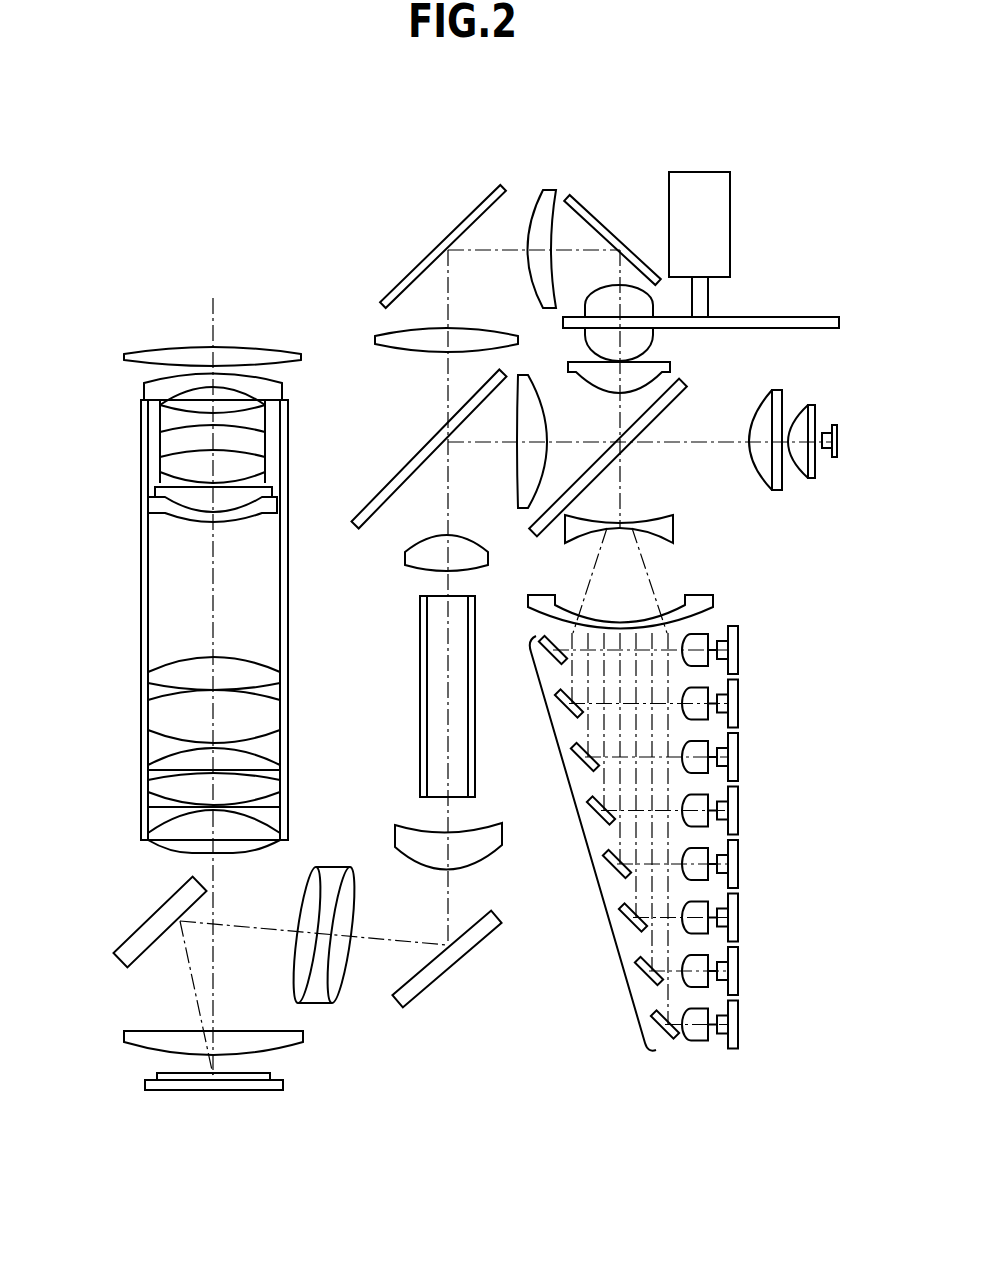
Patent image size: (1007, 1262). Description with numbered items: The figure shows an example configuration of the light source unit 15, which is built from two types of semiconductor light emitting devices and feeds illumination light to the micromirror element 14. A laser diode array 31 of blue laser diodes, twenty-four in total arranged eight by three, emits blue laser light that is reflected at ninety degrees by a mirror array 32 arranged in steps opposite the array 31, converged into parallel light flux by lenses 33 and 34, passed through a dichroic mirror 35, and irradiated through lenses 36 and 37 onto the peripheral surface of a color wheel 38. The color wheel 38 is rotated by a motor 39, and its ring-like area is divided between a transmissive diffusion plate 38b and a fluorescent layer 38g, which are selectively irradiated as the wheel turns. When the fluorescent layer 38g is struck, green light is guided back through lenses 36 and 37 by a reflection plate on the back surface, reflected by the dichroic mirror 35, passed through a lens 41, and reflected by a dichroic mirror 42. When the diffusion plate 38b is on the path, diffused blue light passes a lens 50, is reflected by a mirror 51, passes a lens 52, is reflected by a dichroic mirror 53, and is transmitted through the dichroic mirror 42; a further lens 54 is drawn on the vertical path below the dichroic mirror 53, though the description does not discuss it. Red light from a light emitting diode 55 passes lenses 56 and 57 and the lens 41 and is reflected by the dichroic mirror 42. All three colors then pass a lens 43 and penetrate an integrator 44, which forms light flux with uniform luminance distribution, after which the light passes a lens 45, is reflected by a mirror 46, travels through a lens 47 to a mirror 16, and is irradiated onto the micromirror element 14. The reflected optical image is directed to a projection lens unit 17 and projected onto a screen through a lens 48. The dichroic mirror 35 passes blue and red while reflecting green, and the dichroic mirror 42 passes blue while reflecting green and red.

The micromirror element 14 is at (283, 1086).
The light source unit 15 is at (641, 118).
The mirror 16 is at (140, 921).
The projection lens unit 17 is at (111, 348).
The laser diode array 31 is at (751, 622).
The mirror array 32 is at (589, 849).
The lens 33 is at (700, 595).
The lens 34 is at (665, 515).
The dichroic mirror 35 is at (687, 390).
The lens 36 is at (672, 366).
The lens 37 is at (652, 341).
The color wheel 38 is at (795, 317).
The transmissive diffusion plate 38b is at (730, 328).
The fluorescent layer 38g is at (770, 322).
The motor 39 is at (731, 212).
The lens 41 is at (518, 470).
The dichroic mirror 42 is at (380, 497).
The lens 43 is at (470, 536).
The integrator 44 is at (475, 612).
The lens 45 is at (496, 823).
The mirror 46 is at (497, 917).
The lens 47 is at (335, 867).
The lens 48 is at (258, 1031).
The lens 50 is at (600, 296).
The mirror 51 is at (590, 215).
The lens 52 is at (531, 231).
The dichroic mirror 53 is at (467, 221).
The lens 54 is at (465, 329).
The light emitting diode 55 is at (833, 424).
The lens 56 is at (812, 479).
The lens 57 is at (770, 491).